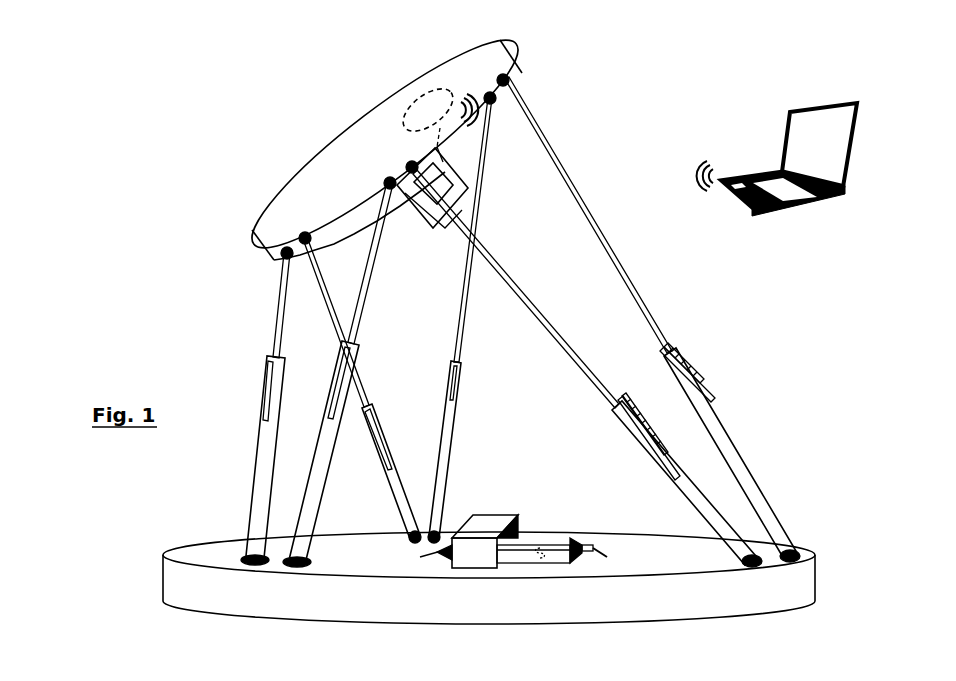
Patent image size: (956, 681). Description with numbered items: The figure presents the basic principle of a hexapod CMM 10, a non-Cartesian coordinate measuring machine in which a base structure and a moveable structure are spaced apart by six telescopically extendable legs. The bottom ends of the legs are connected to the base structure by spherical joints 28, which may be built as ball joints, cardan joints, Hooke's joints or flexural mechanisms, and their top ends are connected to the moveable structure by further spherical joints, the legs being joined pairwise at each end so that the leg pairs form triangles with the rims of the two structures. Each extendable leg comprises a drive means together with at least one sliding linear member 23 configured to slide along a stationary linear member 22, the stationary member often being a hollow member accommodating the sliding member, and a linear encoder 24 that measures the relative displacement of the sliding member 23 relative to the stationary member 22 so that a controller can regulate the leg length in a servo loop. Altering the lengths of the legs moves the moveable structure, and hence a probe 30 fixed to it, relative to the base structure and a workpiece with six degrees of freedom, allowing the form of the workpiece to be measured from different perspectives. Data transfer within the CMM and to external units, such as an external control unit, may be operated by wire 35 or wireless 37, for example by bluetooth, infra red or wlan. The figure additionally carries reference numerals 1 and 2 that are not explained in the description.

The hexapod CMM 10 is at (170, 141).
The frame / platform and base 1 is at (323, 180).
The control unit 2 is at (461, 597).
The stationary linear member 22 is at (707, 497).
The sliding linear member 23 is at (610, 388).
The linear encoder 24 is at (648, 433).
The spherical joint 28 is at (416, 530).
The probe 30 is at (480, 206).
The wire 35 is at (500, 182).
The wireless 37 is at (506, 60).